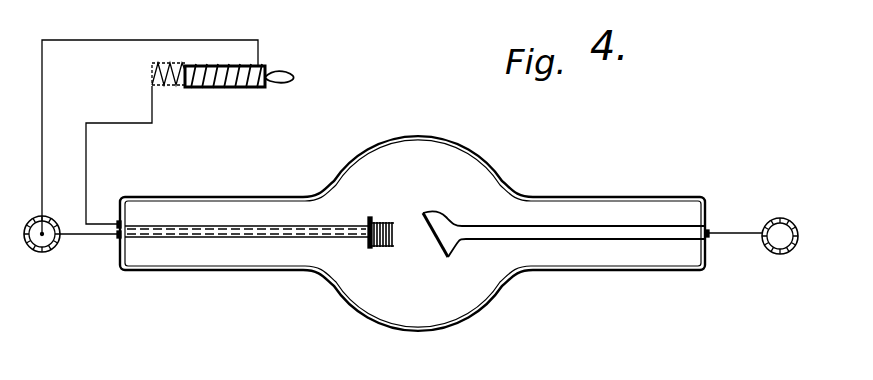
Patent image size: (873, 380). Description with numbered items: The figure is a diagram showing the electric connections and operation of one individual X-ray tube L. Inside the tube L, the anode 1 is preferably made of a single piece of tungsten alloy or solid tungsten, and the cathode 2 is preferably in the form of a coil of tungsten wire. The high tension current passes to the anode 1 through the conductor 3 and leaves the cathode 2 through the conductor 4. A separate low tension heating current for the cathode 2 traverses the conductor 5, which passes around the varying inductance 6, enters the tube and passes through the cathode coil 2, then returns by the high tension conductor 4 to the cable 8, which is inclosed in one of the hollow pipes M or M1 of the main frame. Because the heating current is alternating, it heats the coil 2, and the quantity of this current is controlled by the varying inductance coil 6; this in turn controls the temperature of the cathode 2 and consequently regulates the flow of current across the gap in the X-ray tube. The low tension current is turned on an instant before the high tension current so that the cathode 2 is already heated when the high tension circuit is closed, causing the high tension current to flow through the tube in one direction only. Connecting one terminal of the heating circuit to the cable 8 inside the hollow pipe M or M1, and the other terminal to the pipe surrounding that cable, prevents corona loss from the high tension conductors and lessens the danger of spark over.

The discharge tube L is at (423, 141).
The anode 1 is at (453, 222).
The cathode 2 is at (390, 217).
The conductor 3 is at (725, 232).
The conductor 4 is at (99, 222).
The conductor 5 is at (42, 158).
The varying inductance 6 is at (236, 88).
The cable 8 is at (42, 252).
The hollow pipe M is at (773, 253).
The hollow pipe M1 is at (57, 246).